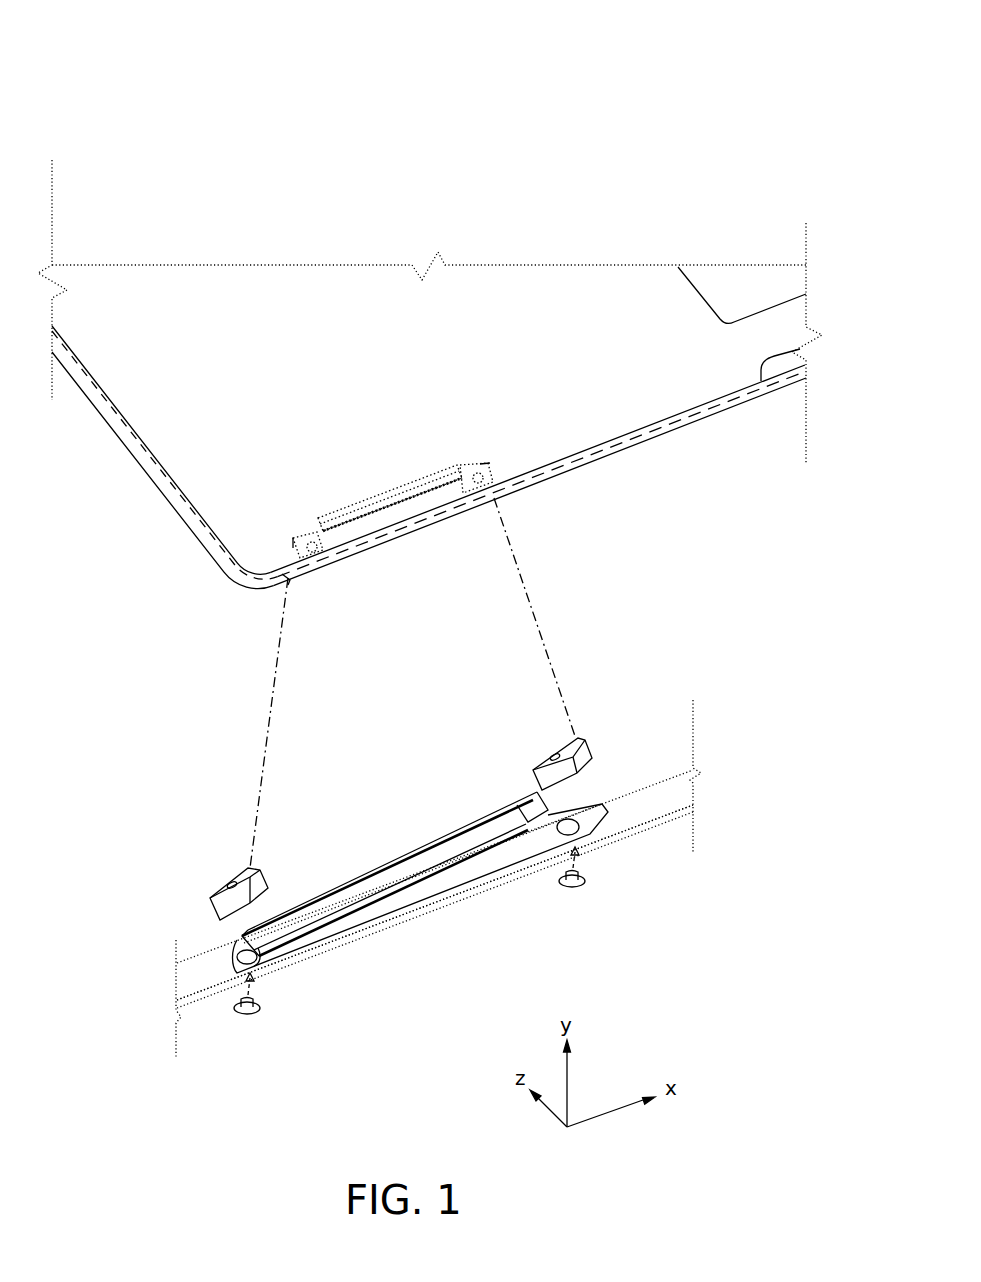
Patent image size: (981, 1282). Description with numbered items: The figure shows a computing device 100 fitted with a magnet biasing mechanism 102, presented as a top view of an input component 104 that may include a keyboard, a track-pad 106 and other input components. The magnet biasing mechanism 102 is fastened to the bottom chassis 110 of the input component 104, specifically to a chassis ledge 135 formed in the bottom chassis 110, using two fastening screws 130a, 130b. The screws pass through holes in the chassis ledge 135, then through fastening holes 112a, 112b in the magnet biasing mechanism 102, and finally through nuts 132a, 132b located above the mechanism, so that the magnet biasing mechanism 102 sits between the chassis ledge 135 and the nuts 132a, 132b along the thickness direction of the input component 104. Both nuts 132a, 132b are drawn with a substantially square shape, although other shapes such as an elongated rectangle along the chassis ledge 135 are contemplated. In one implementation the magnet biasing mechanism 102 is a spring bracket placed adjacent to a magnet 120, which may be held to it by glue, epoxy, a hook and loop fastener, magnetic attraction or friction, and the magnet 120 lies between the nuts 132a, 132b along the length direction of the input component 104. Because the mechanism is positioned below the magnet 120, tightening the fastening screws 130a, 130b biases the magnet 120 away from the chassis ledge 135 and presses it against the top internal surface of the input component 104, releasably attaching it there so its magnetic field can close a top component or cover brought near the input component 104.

The computing device 100 is at (150, 70).
The magnet biasing mechanism 102 is at (307, 533).
The input component 104 is at (224, 573).
The track-pad 106 is at (716, 280).
The bottom chassis 110 is at (568, 472).
The fastening hole 112a is at (330, 551).
The fastening hole 112b is at (478, 490).
The magnet 120 is at (393, 513).
The fastening screw 130a is at (256, 1010).
The fastening screw 130b is at (578, 885).
The nut 132a is at (208, 898).
The nut 132b is at (531, 770).
The chassis ledge 135 is at (473, 897).